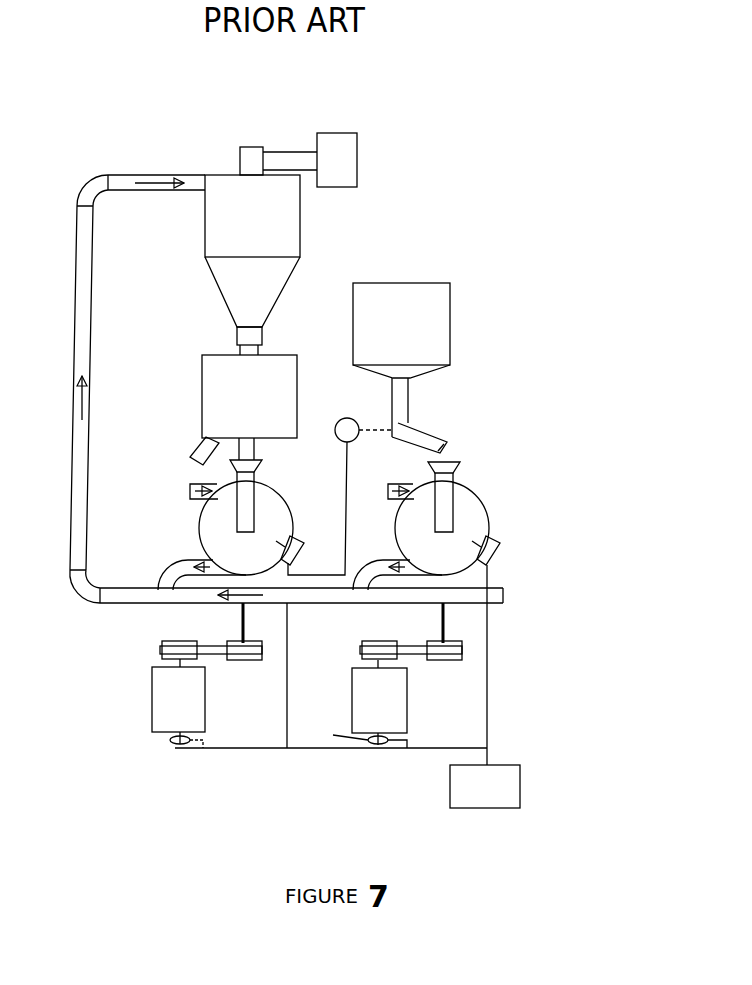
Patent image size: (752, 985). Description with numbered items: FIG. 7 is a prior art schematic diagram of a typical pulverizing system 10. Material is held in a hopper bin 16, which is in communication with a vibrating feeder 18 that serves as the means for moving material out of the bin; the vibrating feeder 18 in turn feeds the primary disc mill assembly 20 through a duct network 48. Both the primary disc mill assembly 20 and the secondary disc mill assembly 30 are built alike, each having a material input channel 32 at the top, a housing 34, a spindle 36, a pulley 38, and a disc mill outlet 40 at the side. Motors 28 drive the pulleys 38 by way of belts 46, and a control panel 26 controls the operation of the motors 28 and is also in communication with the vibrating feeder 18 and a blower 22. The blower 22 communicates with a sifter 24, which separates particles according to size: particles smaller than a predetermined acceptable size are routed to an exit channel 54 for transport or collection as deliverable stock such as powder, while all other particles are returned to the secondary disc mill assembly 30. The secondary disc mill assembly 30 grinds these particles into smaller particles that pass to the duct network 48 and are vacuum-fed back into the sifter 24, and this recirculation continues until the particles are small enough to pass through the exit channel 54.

The pulverizing system 10 is at (131, 140).
The hopper bin 16 is at (378, 281).
The vibrating feeder 18 is at (443, 409).
The primary disc mill assembly 20 is at (480, 477).
The blower 22 is at (338, 130).
The sifter 24 is at (206, 352).
The control panel 26 is at (498, 763).
The motors 28 is at (152, 697).
The secondary disc mill assembly 30 is at (190, 505).
The material input channel 32 is at (258, 473).
The housing 34 is at (292, 512).
The spindle 36 is at (245, 607).
The pulley 38 is at (244, 661).
The disc mill outlet 40 is at (192, 559).
The belts 46 is at (213, 645).
The duct network 48 is at (65, 398).
The exit channel 54 is at (196, 444).